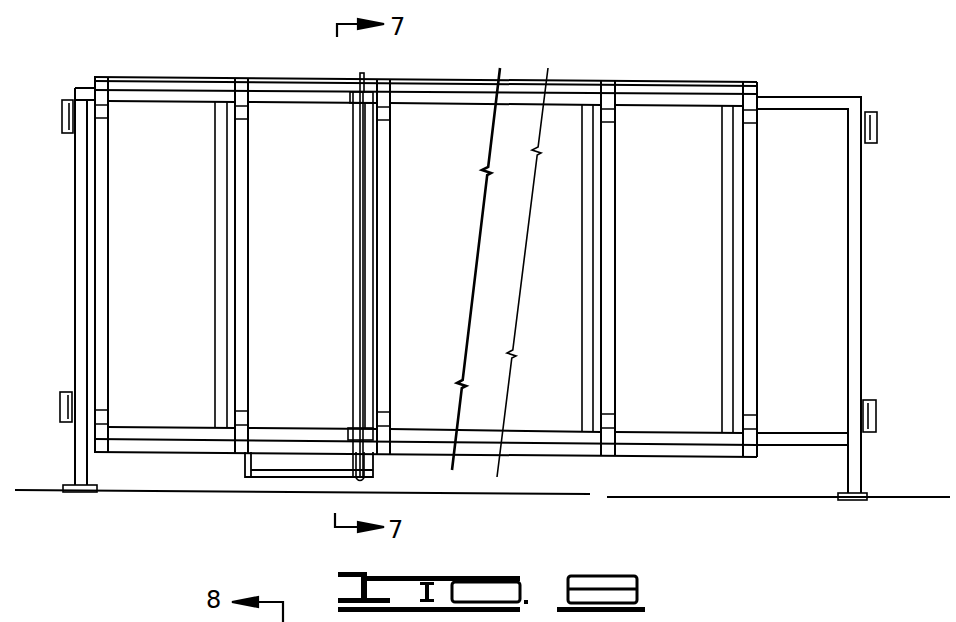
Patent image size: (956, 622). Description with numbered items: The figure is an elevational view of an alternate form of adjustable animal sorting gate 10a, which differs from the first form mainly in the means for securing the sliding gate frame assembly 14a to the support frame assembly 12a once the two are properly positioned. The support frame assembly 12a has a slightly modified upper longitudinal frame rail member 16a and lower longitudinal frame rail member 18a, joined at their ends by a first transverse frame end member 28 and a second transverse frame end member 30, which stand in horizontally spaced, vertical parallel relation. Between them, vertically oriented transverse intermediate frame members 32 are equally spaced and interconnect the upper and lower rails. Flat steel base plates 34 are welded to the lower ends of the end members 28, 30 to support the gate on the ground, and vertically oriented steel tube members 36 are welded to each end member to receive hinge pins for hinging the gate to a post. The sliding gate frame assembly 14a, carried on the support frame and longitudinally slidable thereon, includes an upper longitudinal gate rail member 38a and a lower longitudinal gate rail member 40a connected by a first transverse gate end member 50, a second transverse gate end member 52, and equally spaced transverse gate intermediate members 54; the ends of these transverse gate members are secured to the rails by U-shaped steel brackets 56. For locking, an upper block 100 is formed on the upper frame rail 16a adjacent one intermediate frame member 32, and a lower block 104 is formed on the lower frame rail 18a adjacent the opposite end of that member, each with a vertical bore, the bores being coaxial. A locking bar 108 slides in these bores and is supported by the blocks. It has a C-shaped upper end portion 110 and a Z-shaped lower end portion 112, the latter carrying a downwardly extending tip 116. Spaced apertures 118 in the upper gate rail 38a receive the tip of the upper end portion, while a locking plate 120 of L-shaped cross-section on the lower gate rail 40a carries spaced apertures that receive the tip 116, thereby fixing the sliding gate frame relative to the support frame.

The adjustable animal sorting gate 10a is at (826, 78).
The support frame assembly 12a is at (796, 80).
The sliding gate frame assembly 14a is at (622, 72).
The upper longitudinal frame rail member 16a is at (445, 100).
The lower longitudinal frame rail member 18a is at (552, 450).
The first transverse frame end member 28 is at (75, 245).
The second transverse frame end member 30 is at (862, 250).
The transverse intermediate frame member 32 is at (217, 282).
The base plate 34 is at (95, 488).
The vertically oriented steel tube member 36 is at (62, 120).
The upper longitudinal gate rail member 38a is at (476, 82).
The lower longitudinal gate rail member 40a is at (530, 457).
The first transverse gate end member 50 is at (104, 201).
The second transverse gate end member 52 is at (753, 210).
The transverse gate intermediate member 54 is at (246, 200).
The U-shaped steel bracket 56 is at (109, 112).
The upper block 100 is at (355, 103).
The lower block 104 is at (358, 432).
The locking bar 108 is at (360, 255).
The C-shaped upper end portion 110 is at (366, 77).
The Z-shaped lower end portion 112 is at (366, 462).
The downwardly extending tip 116 is at (366, 481).
The aperture 118 is at (192, 621).
The locking plate 120 is at (245, 465).